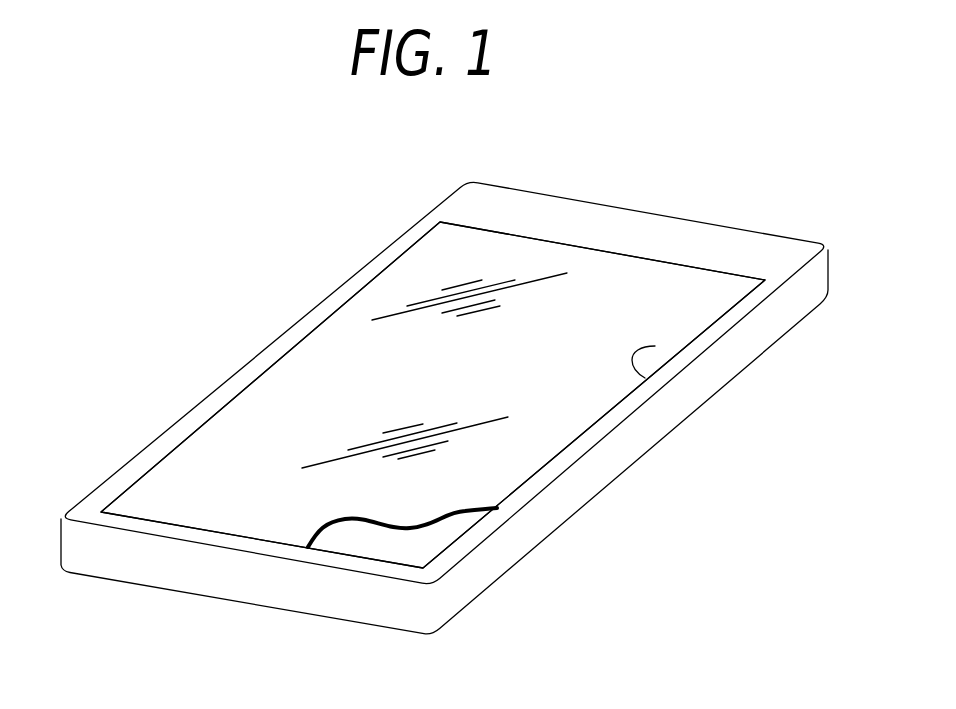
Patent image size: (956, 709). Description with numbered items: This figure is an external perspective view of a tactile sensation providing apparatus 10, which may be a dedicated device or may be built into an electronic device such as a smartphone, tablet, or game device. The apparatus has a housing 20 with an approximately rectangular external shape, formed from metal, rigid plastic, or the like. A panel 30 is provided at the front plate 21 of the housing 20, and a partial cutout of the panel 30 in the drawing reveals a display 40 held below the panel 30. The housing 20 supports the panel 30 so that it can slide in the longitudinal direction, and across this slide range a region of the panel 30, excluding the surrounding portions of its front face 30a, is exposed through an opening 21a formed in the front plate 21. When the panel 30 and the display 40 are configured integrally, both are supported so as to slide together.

The tactile sensation providing apparatus 10 is at (443, 411).
The housing 20 is at (125, 558).
The front plate 21 is at (588, 215).
The opening 21a is at (655, 346).
The panel 30 is at (433, 395).
The front face 30a is at (223, 438).
The display 40 is at (392, 548).